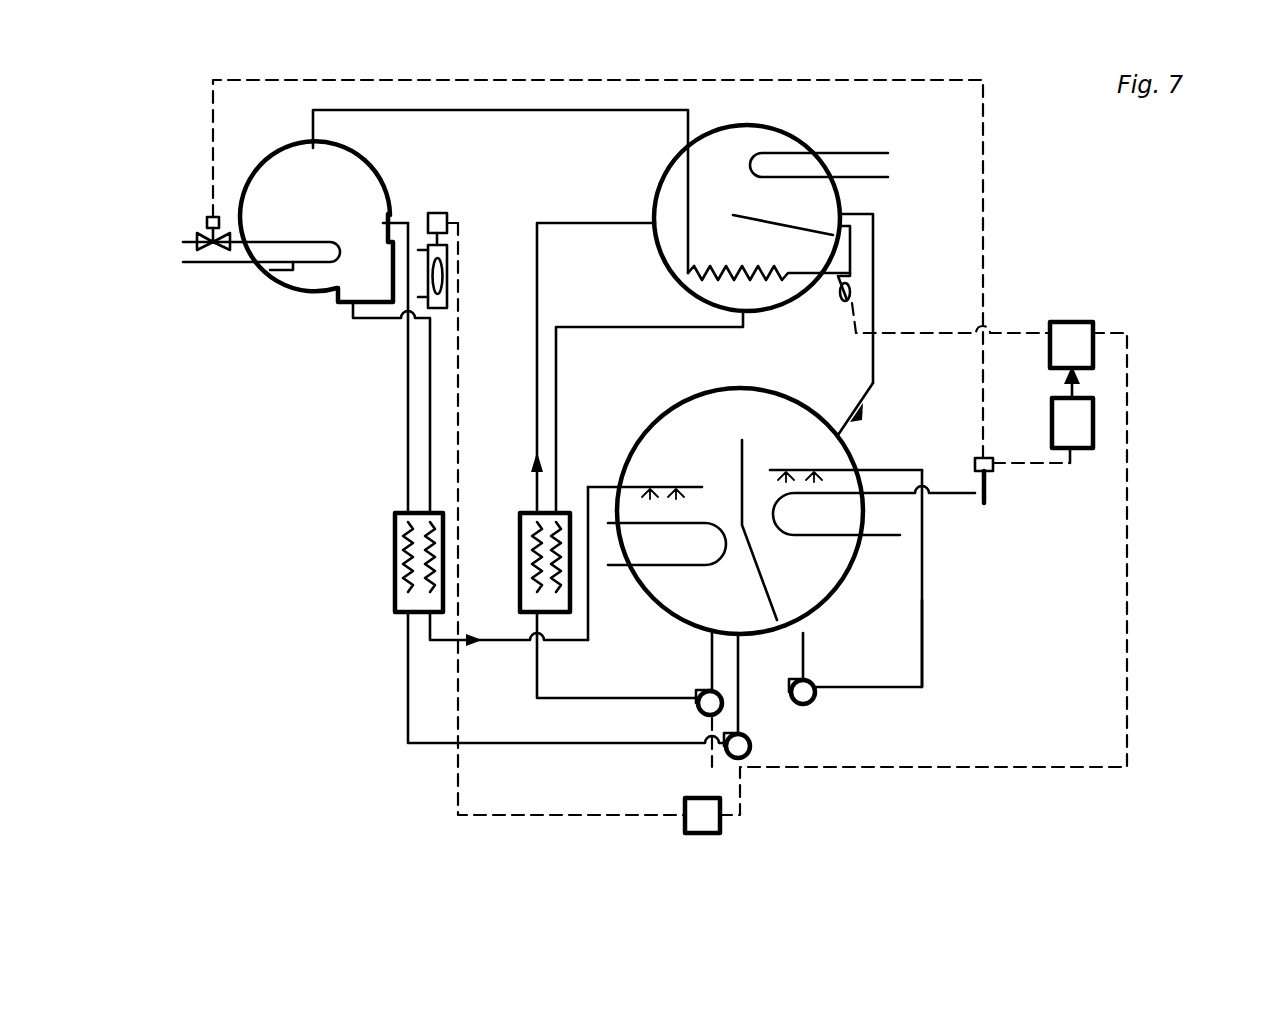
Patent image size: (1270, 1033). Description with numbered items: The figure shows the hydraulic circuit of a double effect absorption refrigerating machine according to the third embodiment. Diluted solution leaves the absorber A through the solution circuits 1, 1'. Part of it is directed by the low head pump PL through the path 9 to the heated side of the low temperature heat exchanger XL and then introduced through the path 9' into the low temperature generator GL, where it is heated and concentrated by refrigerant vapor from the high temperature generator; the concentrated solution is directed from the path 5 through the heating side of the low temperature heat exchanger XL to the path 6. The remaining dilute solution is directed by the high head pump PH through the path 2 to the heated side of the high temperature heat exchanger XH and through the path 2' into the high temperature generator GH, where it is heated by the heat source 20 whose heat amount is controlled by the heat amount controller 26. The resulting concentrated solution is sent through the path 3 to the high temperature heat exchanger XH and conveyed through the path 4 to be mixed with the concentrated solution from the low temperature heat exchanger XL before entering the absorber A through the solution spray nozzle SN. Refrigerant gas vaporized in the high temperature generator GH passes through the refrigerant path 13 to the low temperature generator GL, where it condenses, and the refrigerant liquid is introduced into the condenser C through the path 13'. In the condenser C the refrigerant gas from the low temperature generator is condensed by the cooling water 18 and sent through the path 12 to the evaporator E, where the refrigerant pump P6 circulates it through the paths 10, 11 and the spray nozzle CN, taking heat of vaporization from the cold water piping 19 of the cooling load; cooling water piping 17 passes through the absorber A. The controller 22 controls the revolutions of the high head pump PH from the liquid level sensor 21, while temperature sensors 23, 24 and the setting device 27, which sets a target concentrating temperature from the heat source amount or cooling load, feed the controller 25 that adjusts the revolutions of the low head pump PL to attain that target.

The solution circuit 1 is at (753, 683).
The solution circuit 1' is at (692, 661).
The solution path 2 is at (567, 701).
The solution path 2' is at (382, 368).
The solution path 3 is at (360, 318).
The solution path 4 is at (491, 640).
The solution path 5 is at (596, 327).
The solution path 6 is at (588, 488).
The solution path 9 is at (598, 658).
The solution path 9' is at (577, 368).
The refrigerant path 10 is at (804, 658).
The refrigerant path 11 is at (924, 638).
The refrigerant path 12 is at (874, 228).
The refrigerant path 13 is at (500, 191).
The refrigerant path 13' is at (769, 308).
The cooling water piping 17 is at (680, 565).
The cooling water piping 18 is at (790, 152).
The cold water piping 19 is at (814, 535).
The heat source 20 is at (270, 270).
The liquid level sensor 21 is at (440, 213).
The controller 22 is at (722, 818).
The temperature sensor 23 is at (990, 500).
The temperature sensor 24 is at (856, 308).
The controller 25 is at (1075, 322).
The heat amount controller 26 is at (205, 222).
The setting device 27 is at (1084, 448).
The high temperature generator GH is at (355, 160).
The low temperature generator GL is at (656, 240).
The condenser C is at (755, 128).
The absorber A is at (670, 615).
The evaporator E is at (866, 580).
The spray nozzle CN is at (812, 468).
The solution spray nozzle SN is at (658, 485).
The high temperature heat exchanger XH is at (395, 565).
The low temperature heat exchanger XL is at (522, 540).
The low head pump PL is at (694, 712).
The high head pump PH is at (752, 746).
The refrigerant pump P6 is at (815, 698).